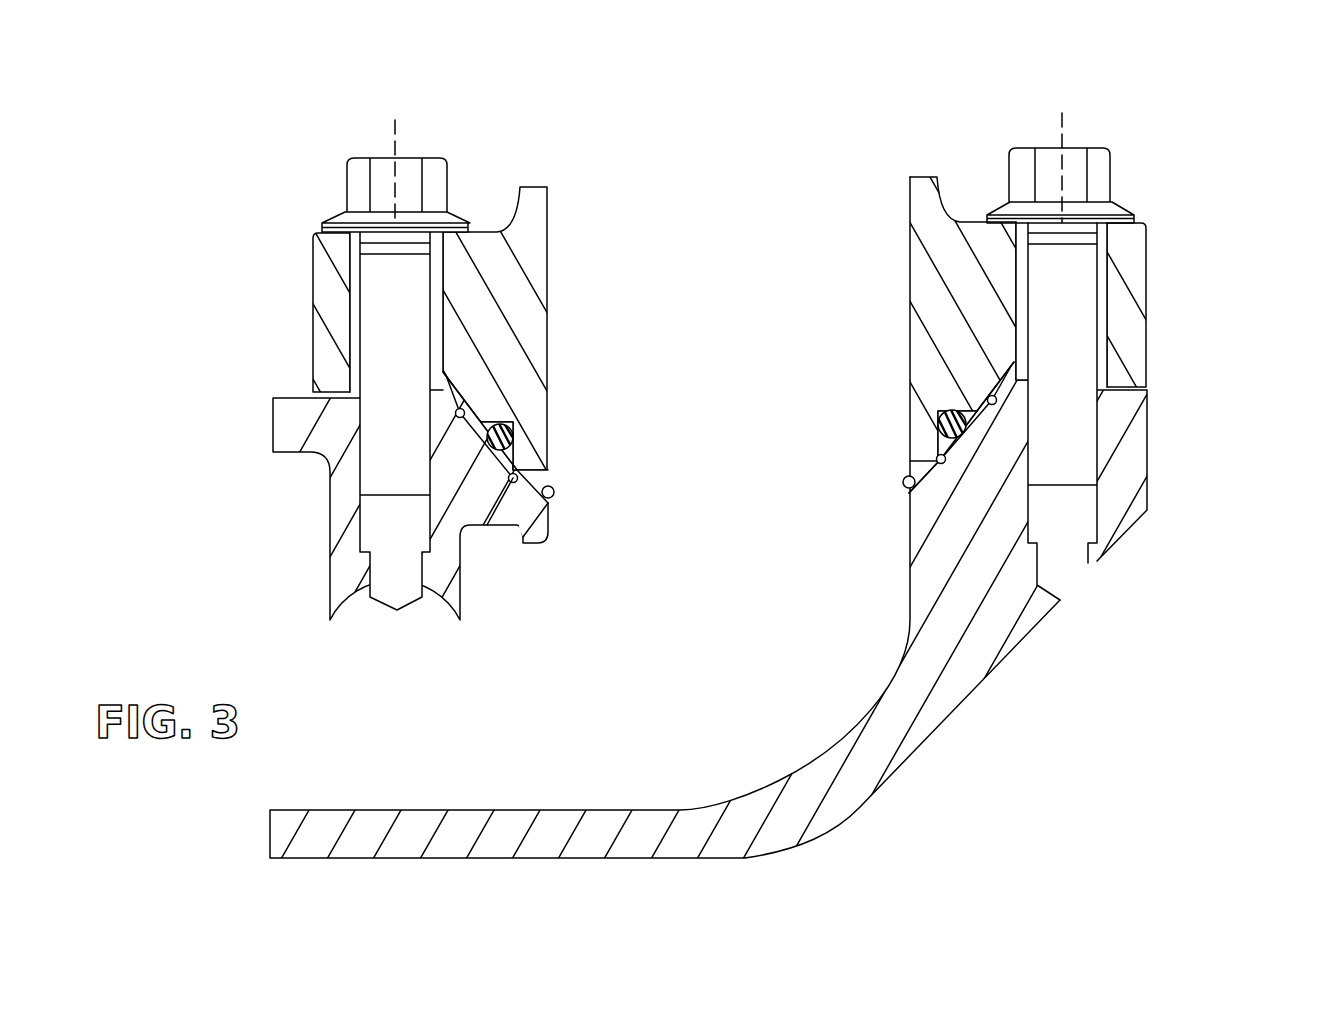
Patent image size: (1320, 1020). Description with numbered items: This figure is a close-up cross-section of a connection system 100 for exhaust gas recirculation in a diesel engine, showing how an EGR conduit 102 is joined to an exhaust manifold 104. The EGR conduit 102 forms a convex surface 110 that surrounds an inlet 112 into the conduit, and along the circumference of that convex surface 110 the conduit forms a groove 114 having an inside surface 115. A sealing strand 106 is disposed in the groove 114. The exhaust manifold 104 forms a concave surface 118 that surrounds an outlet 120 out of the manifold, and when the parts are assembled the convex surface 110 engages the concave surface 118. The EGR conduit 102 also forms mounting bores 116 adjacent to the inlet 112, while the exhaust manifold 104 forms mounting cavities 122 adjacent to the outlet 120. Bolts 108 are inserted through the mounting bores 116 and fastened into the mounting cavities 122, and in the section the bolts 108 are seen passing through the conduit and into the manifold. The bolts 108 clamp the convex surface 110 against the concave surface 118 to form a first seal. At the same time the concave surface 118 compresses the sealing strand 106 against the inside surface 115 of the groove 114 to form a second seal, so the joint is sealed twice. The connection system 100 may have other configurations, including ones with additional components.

The connection system 100 is at (695, 84).
The exhaust gas recirculation (EGR) conduit 102 is at (549, 204).
The exhaust manifold 104 is at (908, 760).
The sealing strand 106 is at (514, 430).
The bolts 108 is at (347, 186).
The convex surface 110 is at (462, 410).
The inlet 112 is at (797, 241).
The groove 114 is at (515, 455).
The inside surface 115 is at (486, 420).
The mounting bores 116 is at (356, 341).
The concave surface 118 is at (523, 545).
The outlet 120 is at (607, 679).
The mounting cavities 122 is at (385, 570).